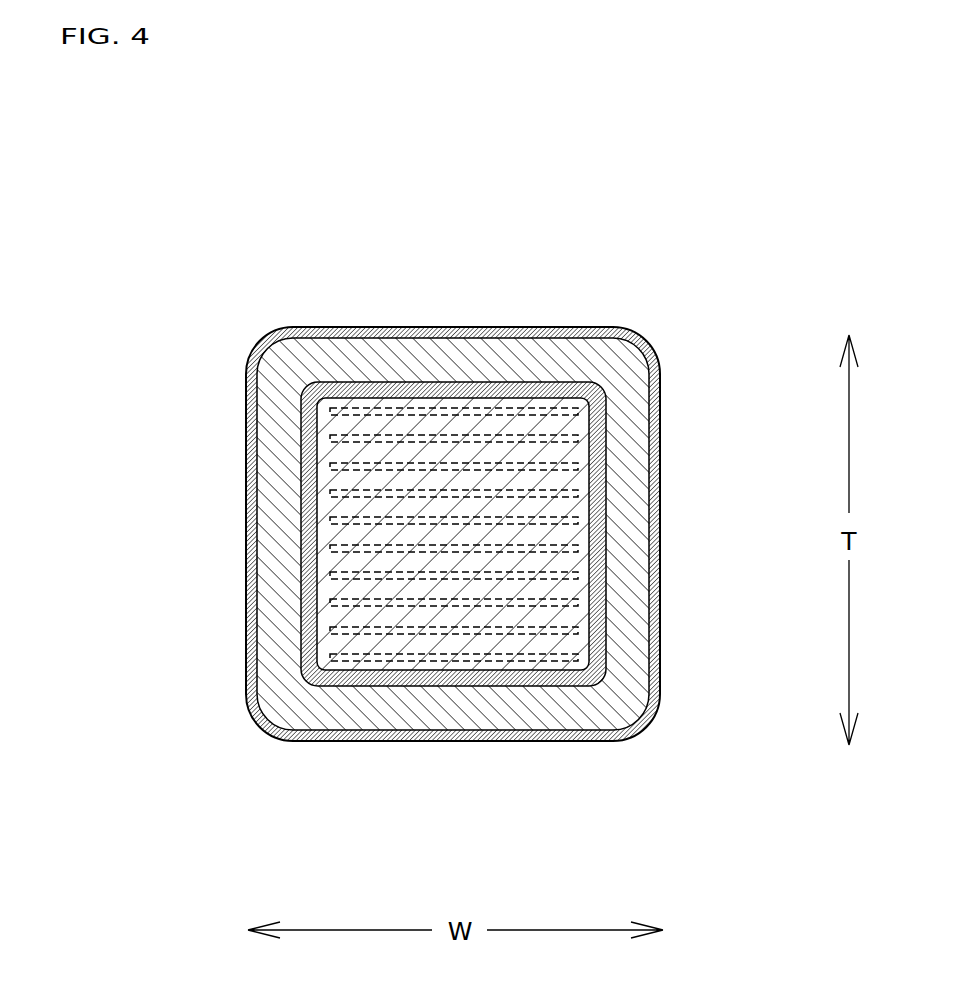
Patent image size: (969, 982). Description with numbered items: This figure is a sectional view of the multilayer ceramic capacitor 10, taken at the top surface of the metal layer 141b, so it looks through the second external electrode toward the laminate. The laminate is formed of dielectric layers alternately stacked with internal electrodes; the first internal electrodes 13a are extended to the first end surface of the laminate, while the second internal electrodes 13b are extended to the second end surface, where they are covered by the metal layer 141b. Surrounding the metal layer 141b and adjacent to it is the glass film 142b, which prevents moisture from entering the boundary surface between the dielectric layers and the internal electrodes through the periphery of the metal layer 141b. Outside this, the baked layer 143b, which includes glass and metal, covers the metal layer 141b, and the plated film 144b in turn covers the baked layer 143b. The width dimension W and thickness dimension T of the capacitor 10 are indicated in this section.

The multilayer ceramic capacitor 10 is at (452, 488).
The first internal electrodes 13a is at (457, 462).
The second internal electrodes 13b is at (481, 604).
The metal layer 141b is at (513, 677).
The glass film 142b is at (565, 683).
The baked layer 143b is at (257, 559).
The plated film 144b is at (247, 483).